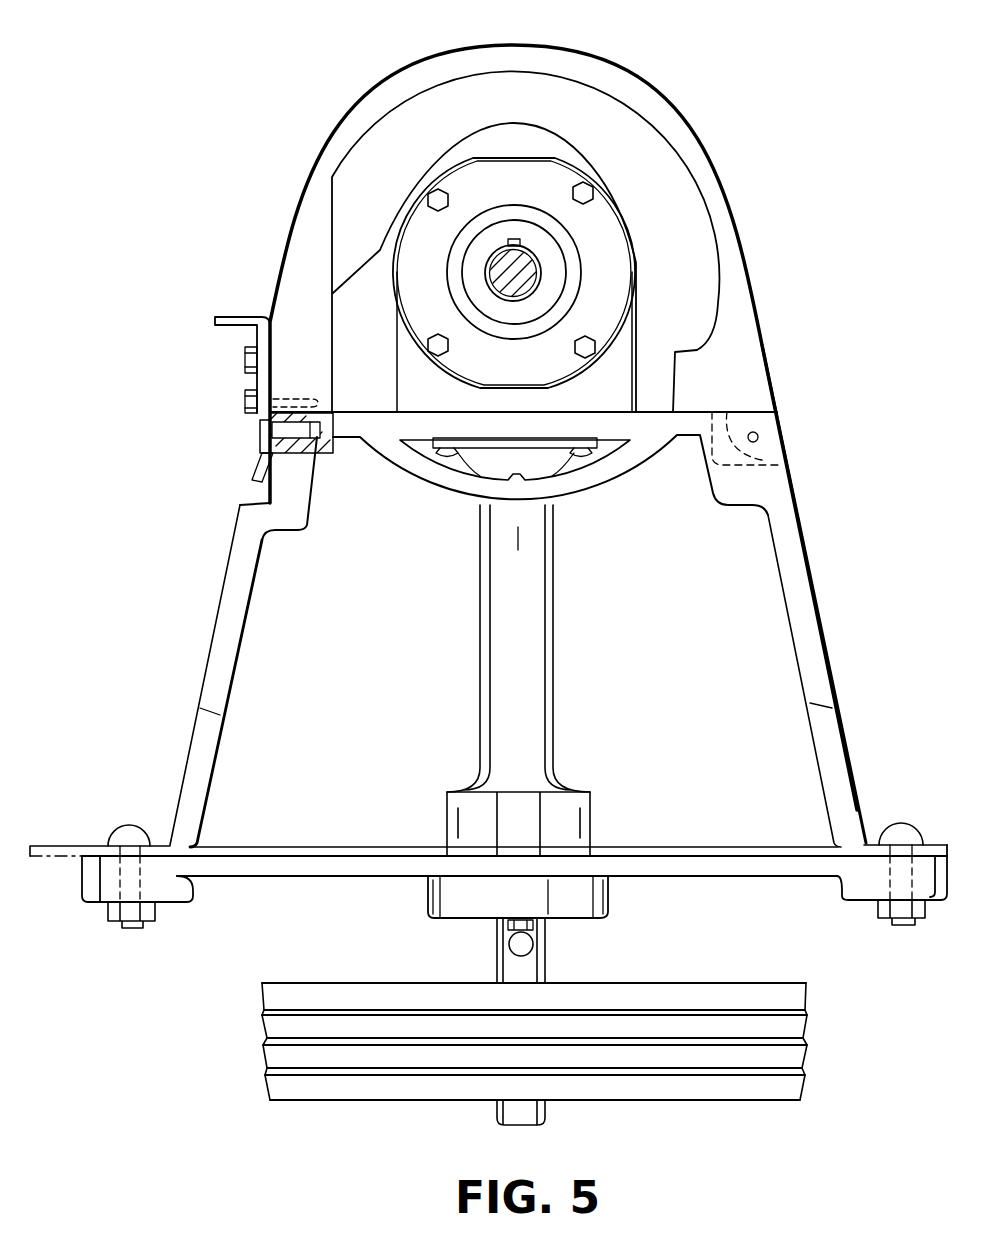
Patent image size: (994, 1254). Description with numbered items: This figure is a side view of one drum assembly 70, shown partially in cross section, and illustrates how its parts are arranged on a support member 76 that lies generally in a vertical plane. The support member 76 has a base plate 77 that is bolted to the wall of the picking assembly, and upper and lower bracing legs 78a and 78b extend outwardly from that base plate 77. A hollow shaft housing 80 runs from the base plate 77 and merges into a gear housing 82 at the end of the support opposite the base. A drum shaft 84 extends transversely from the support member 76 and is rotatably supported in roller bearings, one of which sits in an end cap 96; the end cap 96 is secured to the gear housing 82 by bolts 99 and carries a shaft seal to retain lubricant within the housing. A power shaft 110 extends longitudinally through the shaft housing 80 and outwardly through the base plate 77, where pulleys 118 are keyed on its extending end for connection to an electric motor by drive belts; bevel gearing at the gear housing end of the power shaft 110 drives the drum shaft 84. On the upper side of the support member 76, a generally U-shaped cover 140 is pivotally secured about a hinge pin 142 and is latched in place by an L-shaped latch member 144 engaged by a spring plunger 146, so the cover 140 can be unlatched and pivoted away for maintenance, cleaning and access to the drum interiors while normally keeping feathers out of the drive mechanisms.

The drum assembly 70 is at (778, 83).
The cover 140 is at (720, 200).
The latch member 144 is at (233, 318).
The spring plunger 146 is at (268, 432).
The hinge pin 142 is at (760, 433).
The bolts 99 is at (575, 191).
The drum shaft 84 is at (540, 258).
The end cap 96 is at (611, 298).
The gear housing 82 is at (610, 393).
The support member 76 is at (793, 525).
The upper bracing leg 78a is at (803, 603).
The lower bracing leg 78b is at (232, 628).
The shaft housing 80 is at (543, 622).
The base plate 77 is at (680, 862).
The power shaft 110 is at (532, 962).
The pulleys 118 is at (733, 998).